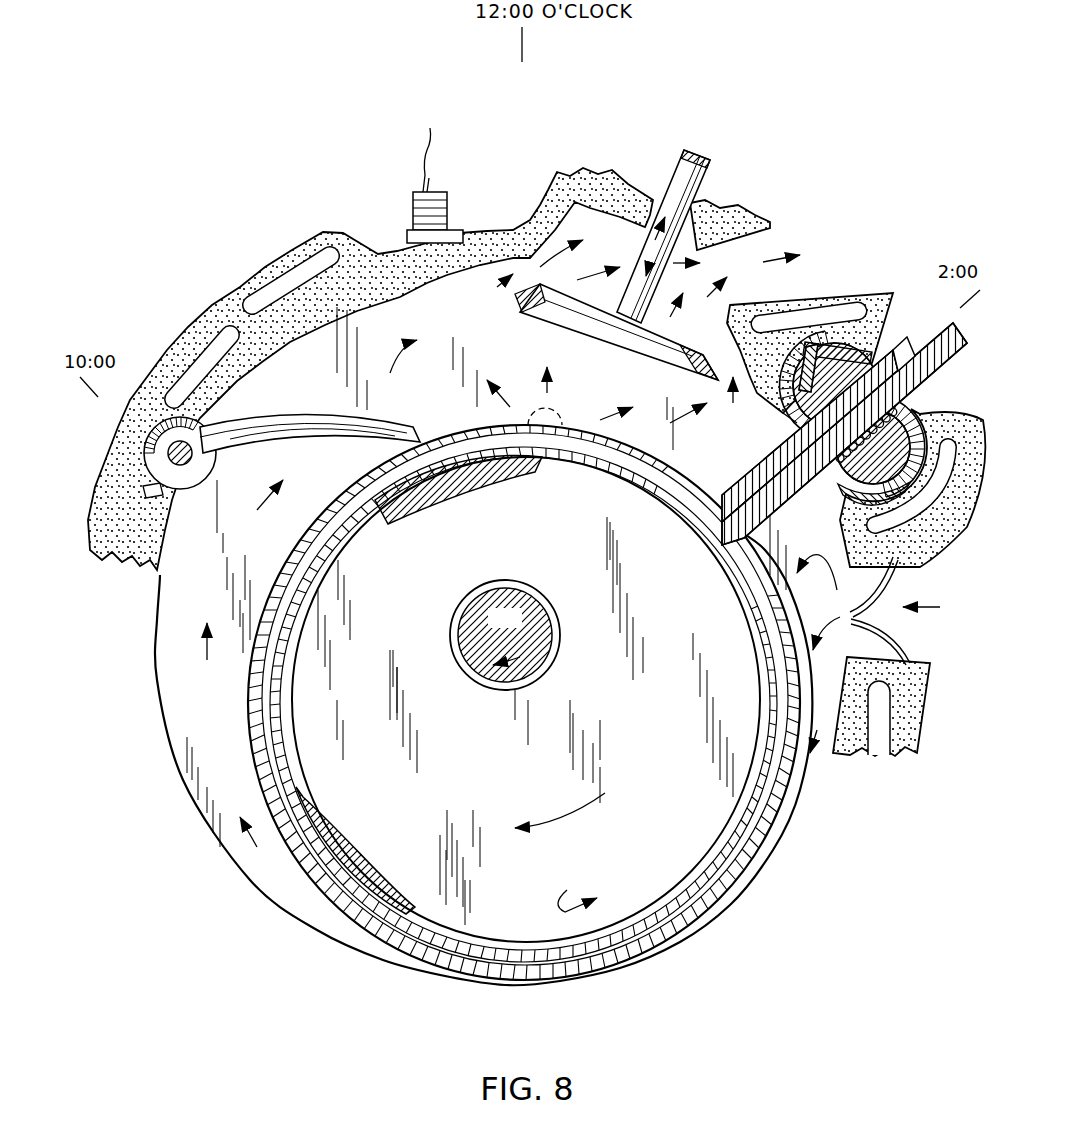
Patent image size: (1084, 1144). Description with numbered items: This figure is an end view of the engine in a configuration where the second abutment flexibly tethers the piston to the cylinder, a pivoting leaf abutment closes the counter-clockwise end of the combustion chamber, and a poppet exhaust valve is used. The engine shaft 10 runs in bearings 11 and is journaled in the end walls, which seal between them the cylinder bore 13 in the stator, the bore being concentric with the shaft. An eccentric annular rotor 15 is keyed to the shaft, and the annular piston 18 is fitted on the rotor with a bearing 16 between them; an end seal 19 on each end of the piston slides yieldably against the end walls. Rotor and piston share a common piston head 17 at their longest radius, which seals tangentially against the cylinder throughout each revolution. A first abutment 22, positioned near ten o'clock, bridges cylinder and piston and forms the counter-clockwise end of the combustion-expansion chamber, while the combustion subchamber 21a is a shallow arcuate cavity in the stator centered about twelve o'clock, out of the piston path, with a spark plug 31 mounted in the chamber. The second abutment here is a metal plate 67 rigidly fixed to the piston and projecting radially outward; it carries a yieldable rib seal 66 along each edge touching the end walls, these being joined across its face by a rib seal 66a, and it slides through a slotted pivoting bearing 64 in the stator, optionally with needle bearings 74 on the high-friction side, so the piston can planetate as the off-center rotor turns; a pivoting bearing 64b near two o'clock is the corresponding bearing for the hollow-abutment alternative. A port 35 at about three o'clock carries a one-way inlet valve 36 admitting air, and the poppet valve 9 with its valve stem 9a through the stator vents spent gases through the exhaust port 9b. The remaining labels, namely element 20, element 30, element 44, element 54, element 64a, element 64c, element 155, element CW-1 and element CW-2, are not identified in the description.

The poppet valve 9 is at (593, 340).
The valve stem 9a is at (707, 150).
The exhaust port 9b is at (796, 248).
The engine shaft 10 is at (505, 635).
The bearings 11 is at (553, 650).
The cylinder bore 13 is at (157, 632).
The eccentric annular rotor 15 is at (525, 721).
The bearing 16 is at (333, 560).
The piston head 17 is at (576, 889).
The annular piston 18 is at (245, 700).
The end seal 19 is at (305, 555).
The annular passage 20 is at (235, 663).
The combustion subchamber 21a is at (497, 270).
The first abutment 22 is at (272, 418).
The support block 30 is at (788, 380).
The spark plug 31 is at (443, 203).
The port 35 is at (920, 658).
The one-way inlet valve 36 is at (880, 590).
The housing segment 44 is at (257, 300).
The arm blade 54 is at (313, 434).
The slotted pivoting bearing 64 is at (828, 384).
The roller wedge 64a is at (897, 350).
The pivoting bearing 64b is at (898, 560).
The roller pad 64c is at (840, 497).
The yieldable rib seal 66 is at (747, 485).
The rib seal 66a is at (797, 424).
The metal plate 67 is at (950, 362).
The needle bearings 74 is at (903, 408).
The pivot point 155 is at (562, 418).
The counterweight 1 CW-1 is at (452, 505).
The counterweight 2 CW-2 is at (358, 862).